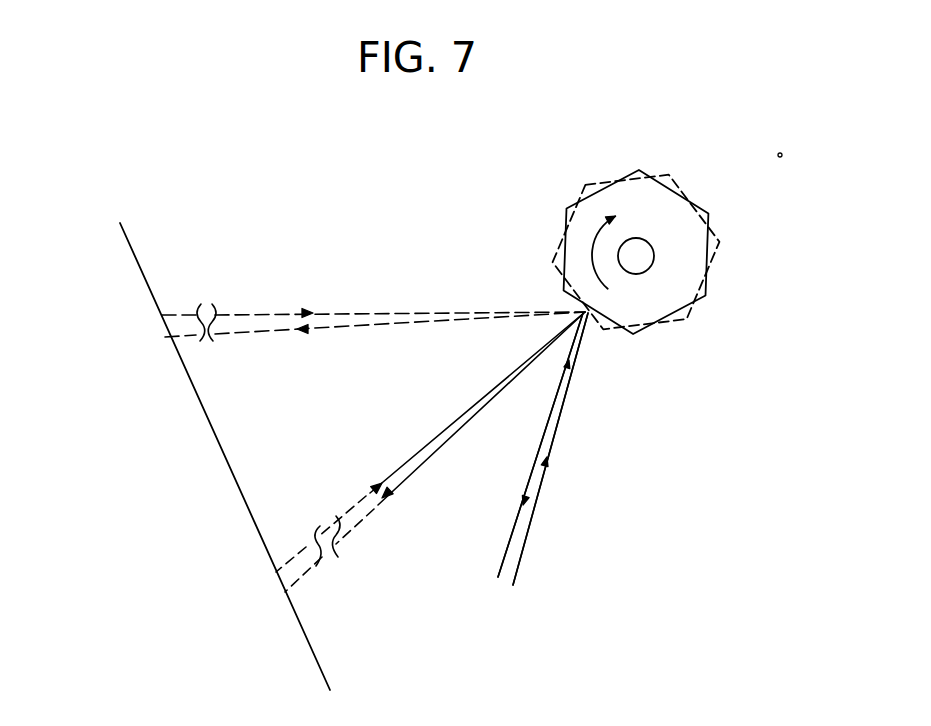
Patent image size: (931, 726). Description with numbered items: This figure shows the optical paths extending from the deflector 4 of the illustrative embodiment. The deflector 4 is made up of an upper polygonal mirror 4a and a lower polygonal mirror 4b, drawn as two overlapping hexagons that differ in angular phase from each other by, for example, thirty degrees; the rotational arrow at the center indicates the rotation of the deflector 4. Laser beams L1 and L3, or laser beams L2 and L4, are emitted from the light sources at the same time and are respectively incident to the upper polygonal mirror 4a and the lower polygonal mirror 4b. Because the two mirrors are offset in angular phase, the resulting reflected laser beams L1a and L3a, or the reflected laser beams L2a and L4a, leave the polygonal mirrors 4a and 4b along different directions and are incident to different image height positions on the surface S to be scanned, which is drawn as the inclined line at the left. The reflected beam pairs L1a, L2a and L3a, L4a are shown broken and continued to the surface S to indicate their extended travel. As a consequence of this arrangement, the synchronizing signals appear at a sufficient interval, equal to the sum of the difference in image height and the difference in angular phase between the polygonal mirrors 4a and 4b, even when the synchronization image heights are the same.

The deflector 4 is at (623, 221).
The upper polygonal mirror 4a is at (562, 212).
The lower polygonal mirror 4b is at (670, 180).
The surface to be scanned S is at (216, 440).
The reflected laser beam L1a is at (425, 447).
The reflected laser beam L2a is at (413, 473).
The reflected laser beam L3a is at (344, 311).
The reflected laser beam L4a is at (328, 328).
The laser beam L1 is at (552, 435).
The laser beam L2 is at (543, 437).
The laser beam L3 is at (573, 449).
The laser beam L4 is at (522, 445).